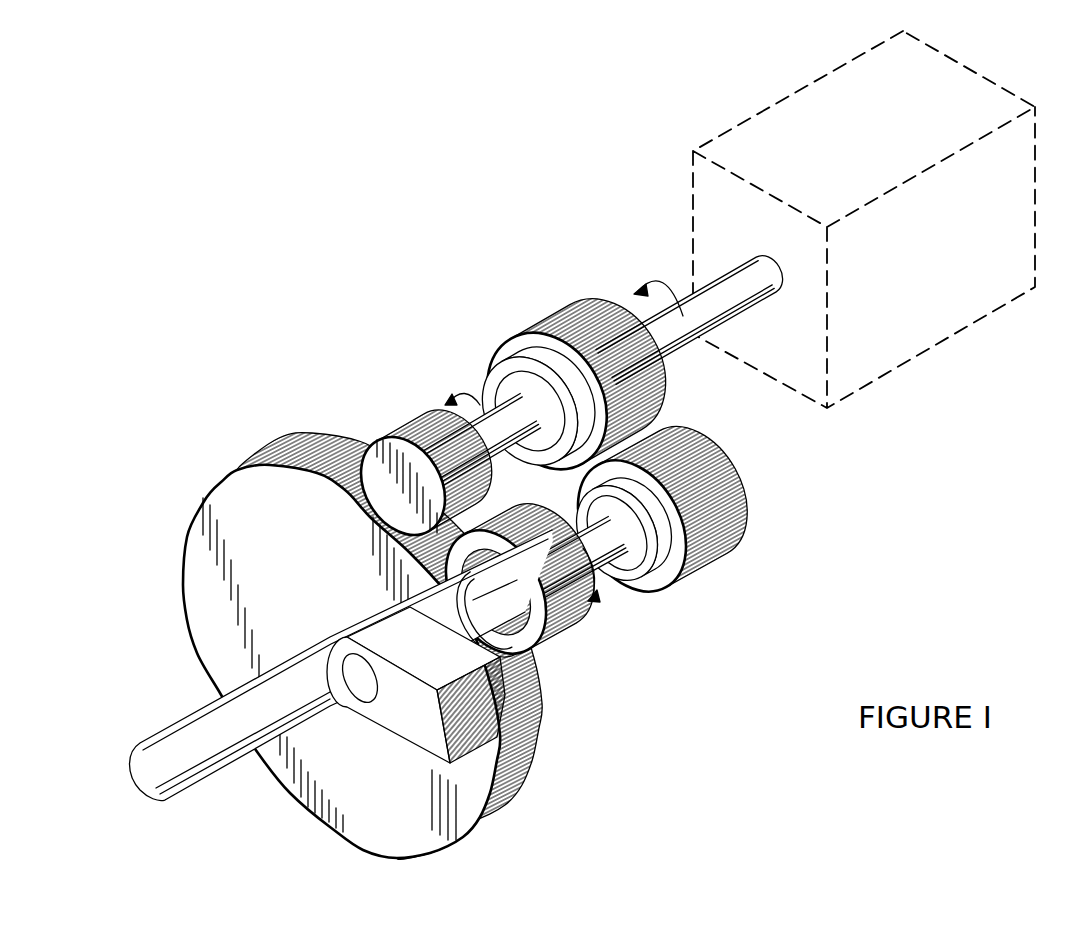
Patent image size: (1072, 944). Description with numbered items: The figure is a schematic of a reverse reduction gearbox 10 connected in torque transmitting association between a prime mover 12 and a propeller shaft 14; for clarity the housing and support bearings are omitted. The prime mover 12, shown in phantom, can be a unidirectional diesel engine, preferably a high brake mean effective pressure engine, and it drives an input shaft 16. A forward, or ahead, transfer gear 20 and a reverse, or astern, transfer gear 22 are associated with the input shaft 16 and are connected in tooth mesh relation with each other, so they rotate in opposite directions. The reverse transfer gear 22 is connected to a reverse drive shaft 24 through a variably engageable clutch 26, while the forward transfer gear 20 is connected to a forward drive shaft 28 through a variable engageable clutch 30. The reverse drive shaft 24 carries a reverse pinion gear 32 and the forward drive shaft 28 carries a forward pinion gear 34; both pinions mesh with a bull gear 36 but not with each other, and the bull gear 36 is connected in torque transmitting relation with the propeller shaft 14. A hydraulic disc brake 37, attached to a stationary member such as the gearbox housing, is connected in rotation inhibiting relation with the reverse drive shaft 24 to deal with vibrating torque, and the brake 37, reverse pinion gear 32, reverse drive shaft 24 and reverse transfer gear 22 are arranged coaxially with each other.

The reverse reduction gearbox 10 is at (386, 302).
The prime mover 12 is at (947, 303).
The propeller shaft 14 is at (231, 762).
The input shaft 16 is at (720, 307).
The forward transfer gear 20 is at (522, 335).
The reverse transfer gear 22 is at (712, 557).
The reverse drive shaft 24 is at (565, 542).
The variably engageable clutch 26 is at (625, 575).
The forward drive shaft 28 is at (490, 440).
The variable engageable clutch 30 is at (490, 392).
The reverse pinion gear 32 is at (553, 637).
The forward pinion gear 34 is at (387, 427).
The bull gear 36 is at (553, 707).
The hydraulic disc brake 37 is at (404, 737).